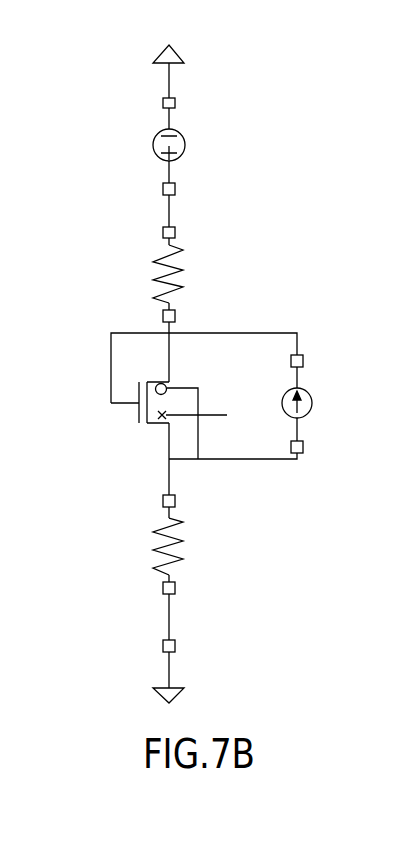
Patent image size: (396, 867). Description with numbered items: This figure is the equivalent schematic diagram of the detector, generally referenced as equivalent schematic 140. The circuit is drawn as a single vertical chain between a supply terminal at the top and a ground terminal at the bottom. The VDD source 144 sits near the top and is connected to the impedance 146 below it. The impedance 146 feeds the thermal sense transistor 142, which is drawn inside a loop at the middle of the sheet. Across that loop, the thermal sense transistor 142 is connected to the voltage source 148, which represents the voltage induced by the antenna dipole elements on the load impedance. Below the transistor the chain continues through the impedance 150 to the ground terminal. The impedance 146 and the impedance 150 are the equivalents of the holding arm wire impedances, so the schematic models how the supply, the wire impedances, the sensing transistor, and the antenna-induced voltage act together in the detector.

The equivalent schematic 140 is at (107, 612).
The thermal sense transistor 142 is at (137, 413).
The VDD source 144 is at (185, 145).
The impedance 146 is at (180, 287).
The voltage source 148 is at (319, 405).
The impedance 150 is at (177, 524).